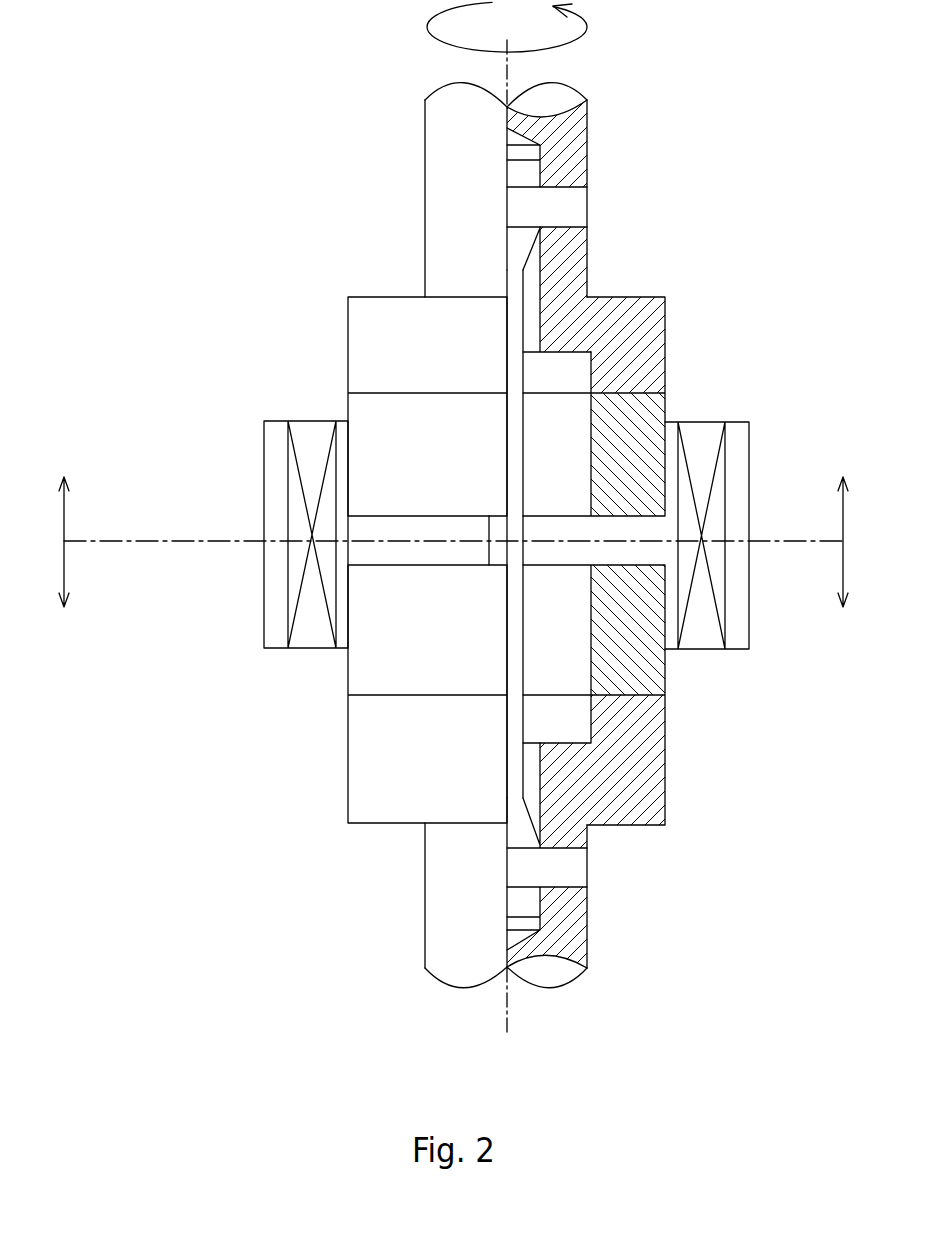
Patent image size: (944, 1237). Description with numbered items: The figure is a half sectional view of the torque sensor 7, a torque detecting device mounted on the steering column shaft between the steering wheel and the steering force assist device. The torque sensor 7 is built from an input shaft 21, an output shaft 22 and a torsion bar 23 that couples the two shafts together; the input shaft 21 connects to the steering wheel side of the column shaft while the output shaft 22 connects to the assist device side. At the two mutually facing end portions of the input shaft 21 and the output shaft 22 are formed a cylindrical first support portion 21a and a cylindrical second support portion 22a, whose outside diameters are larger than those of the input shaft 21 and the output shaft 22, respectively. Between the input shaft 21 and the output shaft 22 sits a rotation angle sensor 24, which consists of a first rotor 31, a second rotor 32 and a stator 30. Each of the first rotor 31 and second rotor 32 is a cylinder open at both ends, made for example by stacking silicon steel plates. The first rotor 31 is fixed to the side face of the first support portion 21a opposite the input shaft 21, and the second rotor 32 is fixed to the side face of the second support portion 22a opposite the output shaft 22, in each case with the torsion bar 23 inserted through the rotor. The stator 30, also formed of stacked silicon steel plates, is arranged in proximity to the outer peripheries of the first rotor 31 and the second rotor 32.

The torque sensor 7 is at (683, 221).
The input shaft 21 is at (588, 133).
The first support portion 21a is at (643, 330).
The output shaft 22 is at (588, 918).
The second support portion 22a is at (647, 783).
The torsion bar 23 is at (517, 737).
The rotation angle sensor 24 is at (160, 682).
The stator 30 is at (277, 474).
The first rotor 31 is at (348, 413).
The second rotor 32 is at (348, 678).